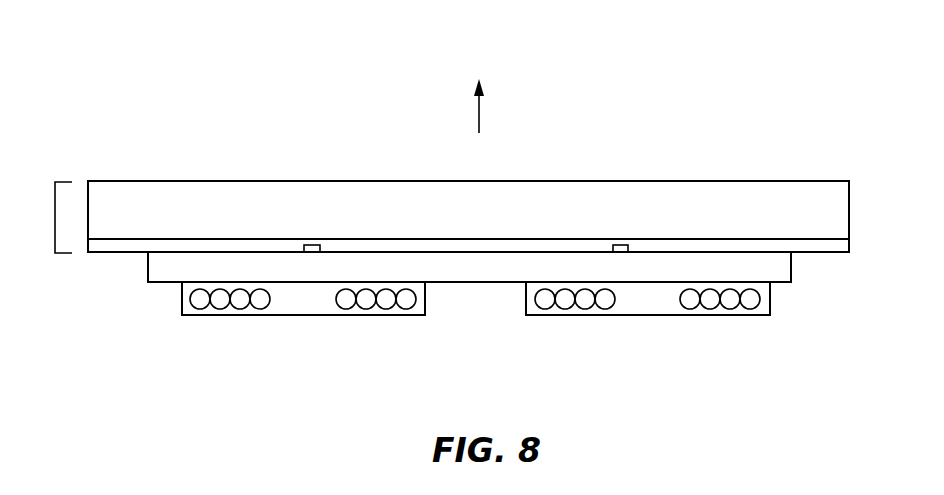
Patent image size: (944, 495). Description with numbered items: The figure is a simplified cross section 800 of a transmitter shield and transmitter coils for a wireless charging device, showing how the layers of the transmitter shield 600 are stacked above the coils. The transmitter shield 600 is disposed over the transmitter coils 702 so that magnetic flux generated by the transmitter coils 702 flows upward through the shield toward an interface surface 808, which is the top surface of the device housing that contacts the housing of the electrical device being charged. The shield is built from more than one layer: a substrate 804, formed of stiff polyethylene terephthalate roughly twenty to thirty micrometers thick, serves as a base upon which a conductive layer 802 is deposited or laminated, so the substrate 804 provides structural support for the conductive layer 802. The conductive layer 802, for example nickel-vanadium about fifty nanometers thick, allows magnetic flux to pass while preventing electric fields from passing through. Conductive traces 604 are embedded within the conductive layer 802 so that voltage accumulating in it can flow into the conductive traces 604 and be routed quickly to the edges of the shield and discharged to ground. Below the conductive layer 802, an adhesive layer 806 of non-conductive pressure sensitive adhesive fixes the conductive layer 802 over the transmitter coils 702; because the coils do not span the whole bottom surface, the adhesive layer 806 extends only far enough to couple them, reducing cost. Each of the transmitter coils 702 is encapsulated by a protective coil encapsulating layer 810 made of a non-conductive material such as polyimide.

The cross section 800 is at (170, 54).
The transmitter shield 600 is at (55, 218).
The substrate 804 is at (143, 228).
The conductive layer 802 is at (849, 243).
The conductive traces 604 is at (620, 244).
The adhesive layer 806 is at (183, 276).
The coil encapsulating layer 810 is at (283, 315).
The transmitter coils 702 is at (192, 297).
The interface surface 808 is at (481, 87).